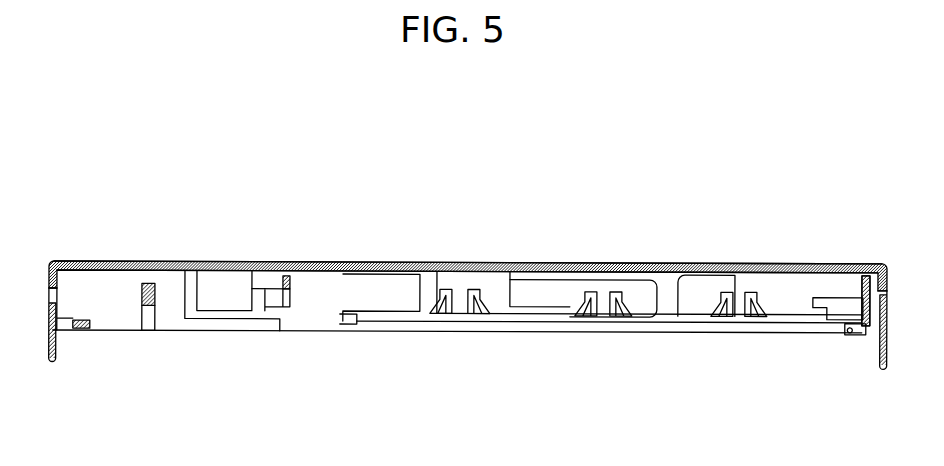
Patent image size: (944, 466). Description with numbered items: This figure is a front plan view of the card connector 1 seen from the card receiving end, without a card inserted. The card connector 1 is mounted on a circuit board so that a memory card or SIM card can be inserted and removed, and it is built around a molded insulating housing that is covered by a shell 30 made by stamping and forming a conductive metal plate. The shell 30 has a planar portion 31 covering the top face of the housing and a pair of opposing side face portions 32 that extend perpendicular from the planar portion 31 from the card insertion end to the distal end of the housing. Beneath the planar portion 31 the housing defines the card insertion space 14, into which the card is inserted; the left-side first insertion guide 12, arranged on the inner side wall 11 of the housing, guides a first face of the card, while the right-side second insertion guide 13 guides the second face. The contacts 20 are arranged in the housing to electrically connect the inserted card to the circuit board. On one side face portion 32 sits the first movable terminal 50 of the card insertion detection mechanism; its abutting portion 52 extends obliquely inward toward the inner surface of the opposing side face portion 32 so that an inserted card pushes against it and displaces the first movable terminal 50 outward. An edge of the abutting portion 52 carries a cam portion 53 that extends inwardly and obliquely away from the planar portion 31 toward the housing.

The card connector 1 is at (690, 208).
The inner side wall 11 is at (130, 316).
The first insertion guide 12 is at (205, 290).
The second insertion guide 13 is at (848, 333).
The card insertion space 14 is at (427, 303).
The contacts 20 is at (567, 267).
The shell 30 is at (495, 258).
The planar portion 31 is at (590, 268).
The side face portions 32 is at (50, 322).
The first movable terminal 50 is at (852, 288).
The abutting portion 52 is at (822, 291).
The cam portion 53 is at (828, 333).